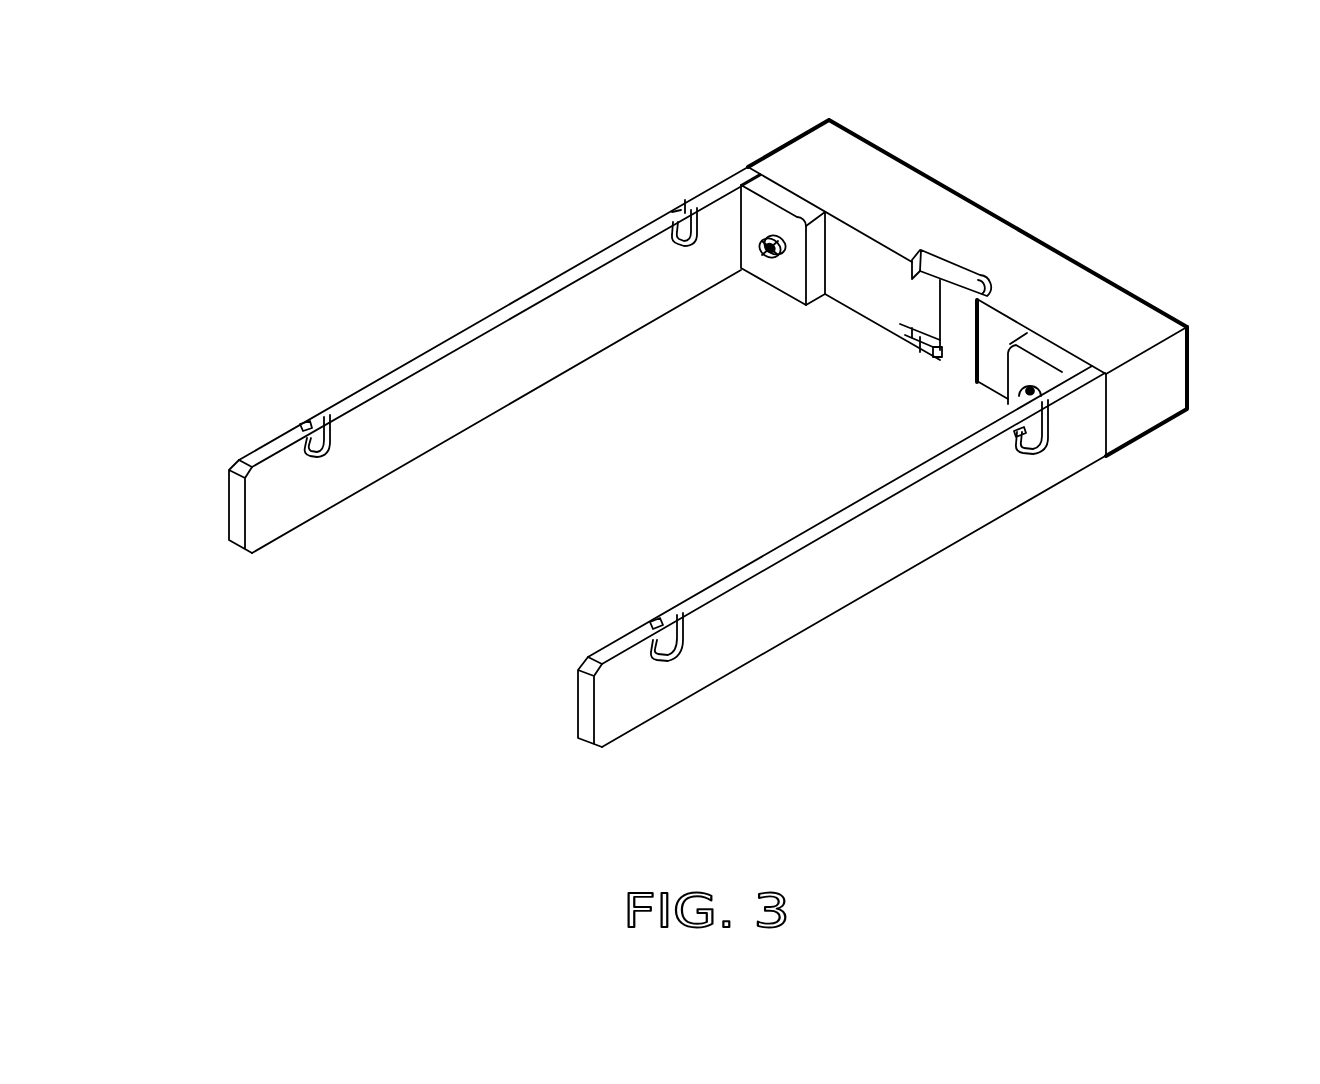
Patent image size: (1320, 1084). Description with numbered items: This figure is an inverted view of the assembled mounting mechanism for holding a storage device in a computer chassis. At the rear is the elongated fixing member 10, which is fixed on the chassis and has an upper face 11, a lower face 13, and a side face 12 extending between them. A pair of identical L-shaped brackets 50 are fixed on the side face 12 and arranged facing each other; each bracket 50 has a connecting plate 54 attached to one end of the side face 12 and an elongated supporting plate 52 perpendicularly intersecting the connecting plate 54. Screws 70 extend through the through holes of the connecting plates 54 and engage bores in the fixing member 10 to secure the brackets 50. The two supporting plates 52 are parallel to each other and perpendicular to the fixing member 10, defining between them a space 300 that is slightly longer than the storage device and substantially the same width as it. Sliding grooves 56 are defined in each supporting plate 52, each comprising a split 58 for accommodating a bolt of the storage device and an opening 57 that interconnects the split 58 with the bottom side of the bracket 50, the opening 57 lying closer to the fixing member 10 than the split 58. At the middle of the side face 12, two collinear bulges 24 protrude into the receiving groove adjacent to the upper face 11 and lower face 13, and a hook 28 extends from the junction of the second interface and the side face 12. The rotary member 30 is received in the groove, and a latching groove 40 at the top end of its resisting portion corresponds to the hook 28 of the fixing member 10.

The fixing member 10 is at (876, 146).
The upper face 11 is at (1153, 427).
The side face 12 is at (870, 287).
The lower face 13 is at (1090, 312).
The bulges 24 is at (985, 297).
The hook 28 is at (910, 335).
The rotary member 30 is at (948, 267).
The latching groove 40 is at (930, 350).
The brackets 50 is at (597, 115).
The supporting plate 52 is at (777, 193).
The connecting plate 54 is at (550, 322).
The sliding grooves 56 is at (196, 327).
The opening 57 is at (313, 413).
The split 58 is at (302, 430).
The screws 70 is at (757, 255).
The space 300 is at (513, 633).